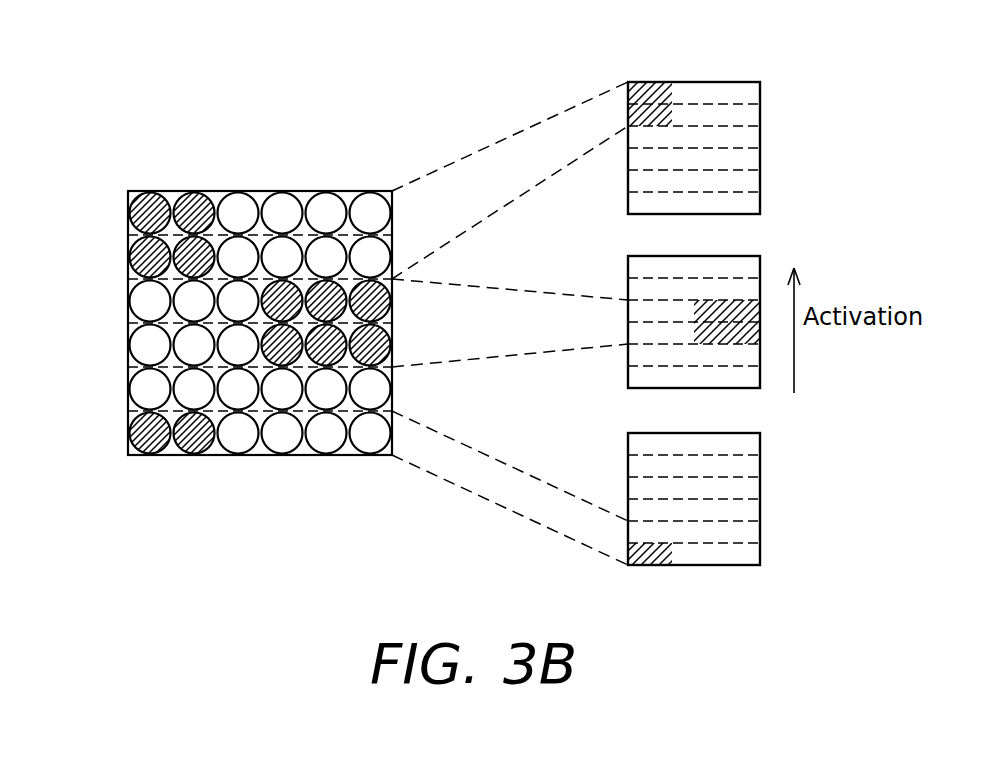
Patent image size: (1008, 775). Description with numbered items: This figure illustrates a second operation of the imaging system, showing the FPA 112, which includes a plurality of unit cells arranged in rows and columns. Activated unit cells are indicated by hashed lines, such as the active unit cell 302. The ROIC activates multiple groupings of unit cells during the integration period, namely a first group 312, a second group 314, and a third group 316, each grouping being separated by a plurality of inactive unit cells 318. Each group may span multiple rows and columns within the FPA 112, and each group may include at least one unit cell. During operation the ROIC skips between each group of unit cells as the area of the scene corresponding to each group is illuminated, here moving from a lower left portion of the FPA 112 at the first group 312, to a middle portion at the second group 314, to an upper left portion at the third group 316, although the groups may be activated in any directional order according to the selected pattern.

The FPA 112 is at (371, 139).
The active unit cell 302 is at (128, 243).
The first group 312 is at (210, 460).
The second group 314 is at (398, 285).
The third group 316 is at (210, 185).
The inactive unit cells 318 is at (256, 198).